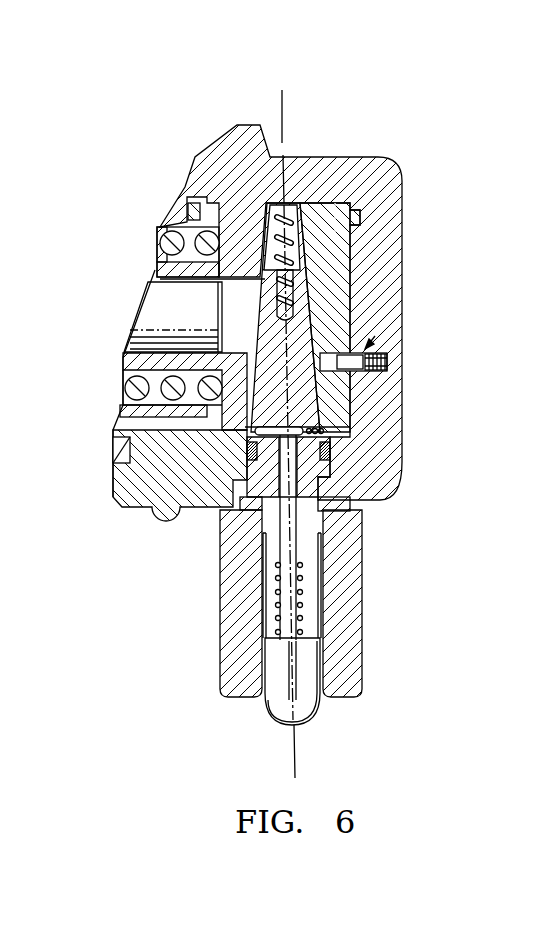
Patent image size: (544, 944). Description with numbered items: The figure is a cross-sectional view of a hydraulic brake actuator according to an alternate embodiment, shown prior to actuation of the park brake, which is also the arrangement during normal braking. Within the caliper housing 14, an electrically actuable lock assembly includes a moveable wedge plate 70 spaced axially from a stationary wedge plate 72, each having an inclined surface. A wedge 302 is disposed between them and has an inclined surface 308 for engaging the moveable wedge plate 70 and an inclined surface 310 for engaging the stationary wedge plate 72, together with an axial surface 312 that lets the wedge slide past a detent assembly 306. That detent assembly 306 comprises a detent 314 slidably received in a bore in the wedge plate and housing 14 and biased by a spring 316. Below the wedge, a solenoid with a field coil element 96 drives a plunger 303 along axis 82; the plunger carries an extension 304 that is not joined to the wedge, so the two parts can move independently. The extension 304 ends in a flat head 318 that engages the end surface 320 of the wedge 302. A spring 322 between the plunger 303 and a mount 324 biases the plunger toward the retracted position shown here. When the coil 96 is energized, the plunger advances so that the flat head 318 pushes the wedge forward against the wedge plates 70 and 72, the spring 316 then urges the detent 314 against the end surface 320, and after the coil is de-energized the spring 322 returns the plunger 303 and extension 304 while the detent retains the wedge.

The caliper housing 14 is at (249, 132).
The moveable wedge plate 70 is at (232, 213).
The stationary wedge plate 72 is at (333, 208).
The axis 82 is at (295, 738).
The field coil element 96 is at (357, 607).
The wedge 302 is at (322, 303).
The plunger 303 is at (278, 697).
The extension 304 is at (298, 477).
The detent assembly 306 is at (374, 337).
The inclined surface 308 is at (250, 312).
The inclined surface 310 is at (302, 328).
The axial surface 312 is at (318, 389).
The detent 314 is at (357, 367).
The spring 316 is at (388, 358).
The flat head 318 is at (337, 430).
The end surface 320 is at (210, 477).
The spring 322 is at (300, 590).
The mount 324 is at (312, 507).